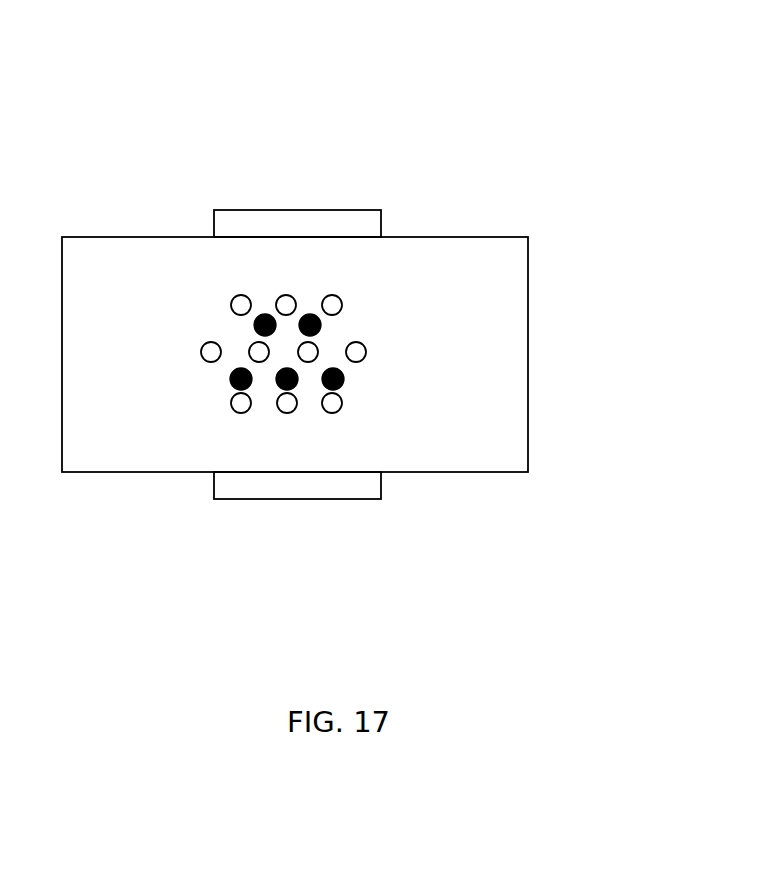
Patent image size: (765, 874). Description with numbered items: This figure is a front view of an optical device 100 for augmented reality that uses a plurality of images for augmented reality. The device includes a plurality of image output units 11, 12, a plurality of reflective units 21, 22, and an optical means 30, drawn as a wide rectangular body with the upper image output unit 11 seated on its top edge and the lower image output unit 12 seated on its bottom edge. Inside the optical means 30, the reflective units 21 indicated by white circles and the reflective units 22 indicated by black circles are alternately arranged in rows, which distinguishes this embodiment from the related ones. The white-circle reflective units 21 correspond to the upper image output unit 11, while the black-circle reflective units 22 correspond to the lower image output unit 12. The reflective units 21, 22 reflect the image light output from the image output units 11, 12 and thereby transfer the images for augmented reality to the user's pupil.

The optical device for augmented reality 100 is at (452, 103).
The optical means 30 is at (528, 352).
The image output unit 11 is at (318, 210).
The image output unit 12 is at (312, 500).
The reflective unit 21 is at (374, 433).
The reflective unit 22 is at (389, 461).